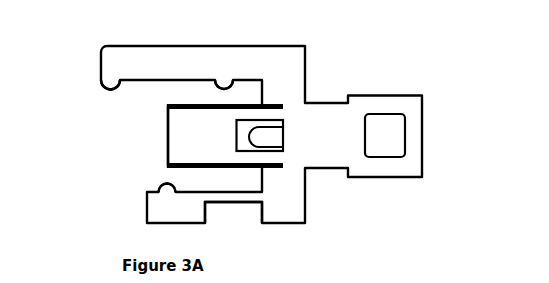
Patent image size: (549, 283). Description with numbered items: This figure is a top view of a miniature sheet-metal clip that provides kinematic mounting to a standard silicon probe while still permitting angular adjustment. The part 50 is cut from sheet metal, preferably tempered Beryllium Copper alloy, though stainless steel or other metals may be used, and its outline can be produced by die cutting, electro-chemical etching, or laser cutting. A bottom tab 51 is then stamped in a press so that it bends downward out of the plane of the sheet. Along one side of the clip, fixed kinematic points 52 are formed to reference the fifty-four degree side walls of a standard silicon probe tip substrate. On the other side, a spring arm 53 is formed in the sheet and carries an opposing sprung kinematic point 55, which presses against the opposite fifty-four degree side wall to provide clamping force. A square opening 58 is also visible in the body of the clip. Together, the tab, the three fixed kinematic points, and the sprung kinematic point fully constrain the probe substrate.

The part 50 is at (312, 138).
The bottom tab 51 is at (167, 147).
The fixed kinematic points 52 is at (250, 137).
The spring arm 53 is at (227, 203).
The sprung kinematic point 55 is at (162, 184).
The square opening 58 is at (389, 136).